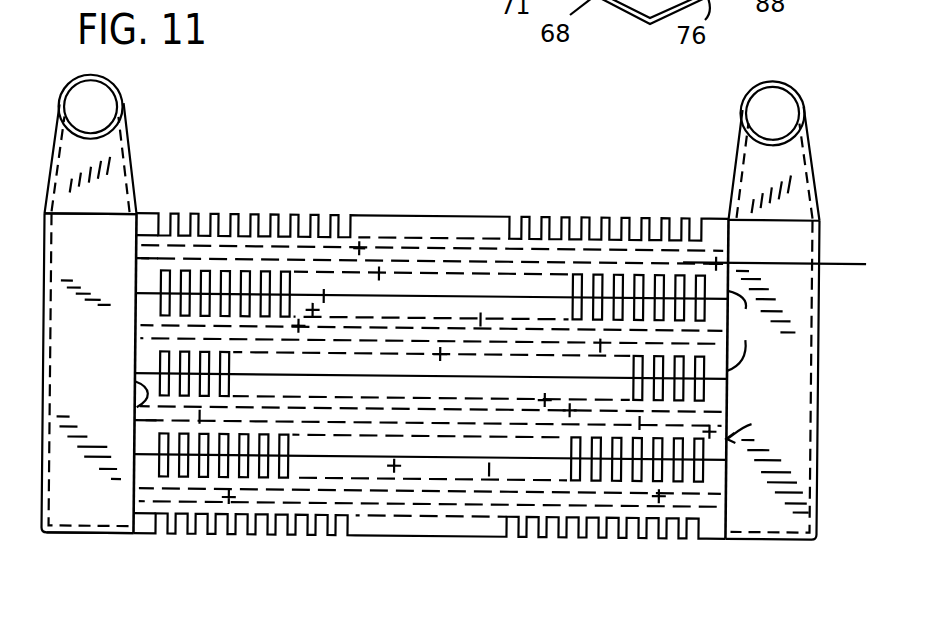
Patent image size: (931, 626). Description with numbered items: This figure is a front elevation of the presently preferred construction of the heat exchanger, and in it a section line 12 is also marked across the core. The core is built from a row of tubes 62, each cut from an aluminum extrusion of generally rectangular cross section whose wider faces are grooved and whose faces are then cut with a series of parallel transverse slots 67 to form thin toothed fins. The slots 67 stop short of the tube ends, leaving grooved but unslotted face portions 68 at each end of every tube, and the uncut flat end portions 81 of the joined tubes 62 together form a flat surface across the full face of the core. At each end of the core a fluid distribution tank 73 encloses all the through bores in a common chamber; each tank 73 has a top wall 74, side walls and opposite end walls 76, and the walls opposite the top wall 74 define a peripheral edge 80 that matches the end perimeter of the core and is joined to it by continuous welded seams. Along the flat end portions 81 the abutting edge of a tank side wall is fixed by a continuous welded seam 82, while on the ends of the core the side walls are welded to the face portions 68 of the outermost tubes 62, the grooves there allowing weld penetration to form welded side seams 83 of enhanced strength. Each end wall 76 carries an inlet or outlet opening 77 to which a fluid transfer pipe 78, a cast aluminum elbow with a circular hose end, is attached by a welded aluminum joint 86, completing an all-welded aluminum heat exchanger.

The module 12 is at (847, 250).
The tube 62 is at (410, 555).
The slots 67 is at (618, 477).
The face portions 68 is at (729, 458).
The fluid distribution tank 73 is at (47, 410).
The top wall 74 is at (43, 356).
The end walls 76 is at (90, 538).
The inlet or outlet opening 77 is at (53, 209).
The fluid transfer pipe 78 is at (110, 150).
The peripheral edge 80 is at (441, 412).
The flat end portions 81 is at (748, 331).
The welded seam 82 is at (728, 373).
The welded side seams 83 is at (135, 537).
The welded aluminum joint 86 is at (116, 215).